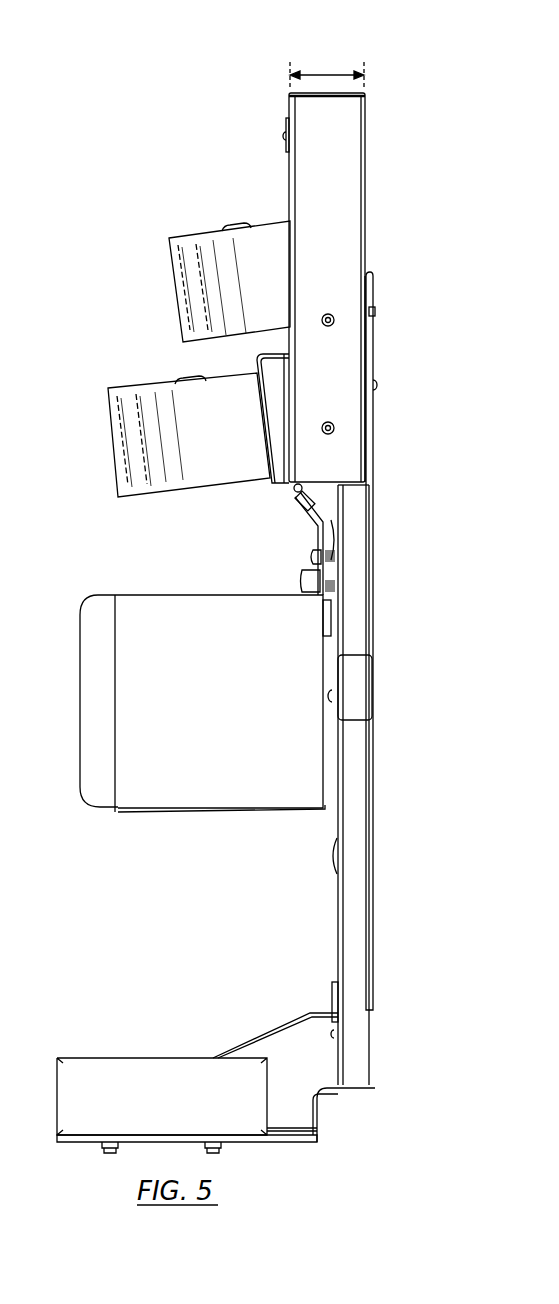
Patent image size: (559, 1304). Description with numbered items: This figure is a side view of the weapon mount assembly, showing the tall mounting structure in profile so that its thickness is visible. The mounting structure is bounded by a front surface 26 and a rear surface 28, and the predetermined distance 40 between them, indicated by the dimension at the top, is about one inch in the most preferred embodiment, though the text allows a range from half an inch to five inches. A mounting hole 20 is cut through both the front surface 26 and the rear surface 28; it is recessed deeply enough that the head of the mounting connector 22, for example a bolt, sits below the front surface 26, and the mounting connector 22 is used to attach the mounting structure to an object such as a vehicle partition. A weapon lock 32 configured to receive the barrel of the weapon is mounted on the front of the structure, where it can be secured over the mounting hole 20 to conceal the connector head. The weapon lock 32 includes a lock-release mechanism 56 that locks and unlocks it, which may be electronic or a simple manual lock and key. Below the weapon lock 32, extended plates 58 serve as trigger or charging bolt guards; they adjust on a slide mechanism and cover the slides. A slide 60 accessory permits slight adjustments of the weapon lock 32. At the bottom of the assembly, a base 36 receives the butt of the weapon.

The mounting hole 20 is at (376, 385).
The mounting connector 22 is at (376, 430).
The front surface 26 is at (335, 912).
The rear surface 28 is at (373, 627).
The weapon lock 32 is at (205, 287).
The base 36 is at (100, 1072).
The predetermined distance 40 is at (332, 75).
The lock-release mechanism 56 is at (236, 224).
The extended plates 58 is at (98, 698).
The slide 60 is at (354, 194).